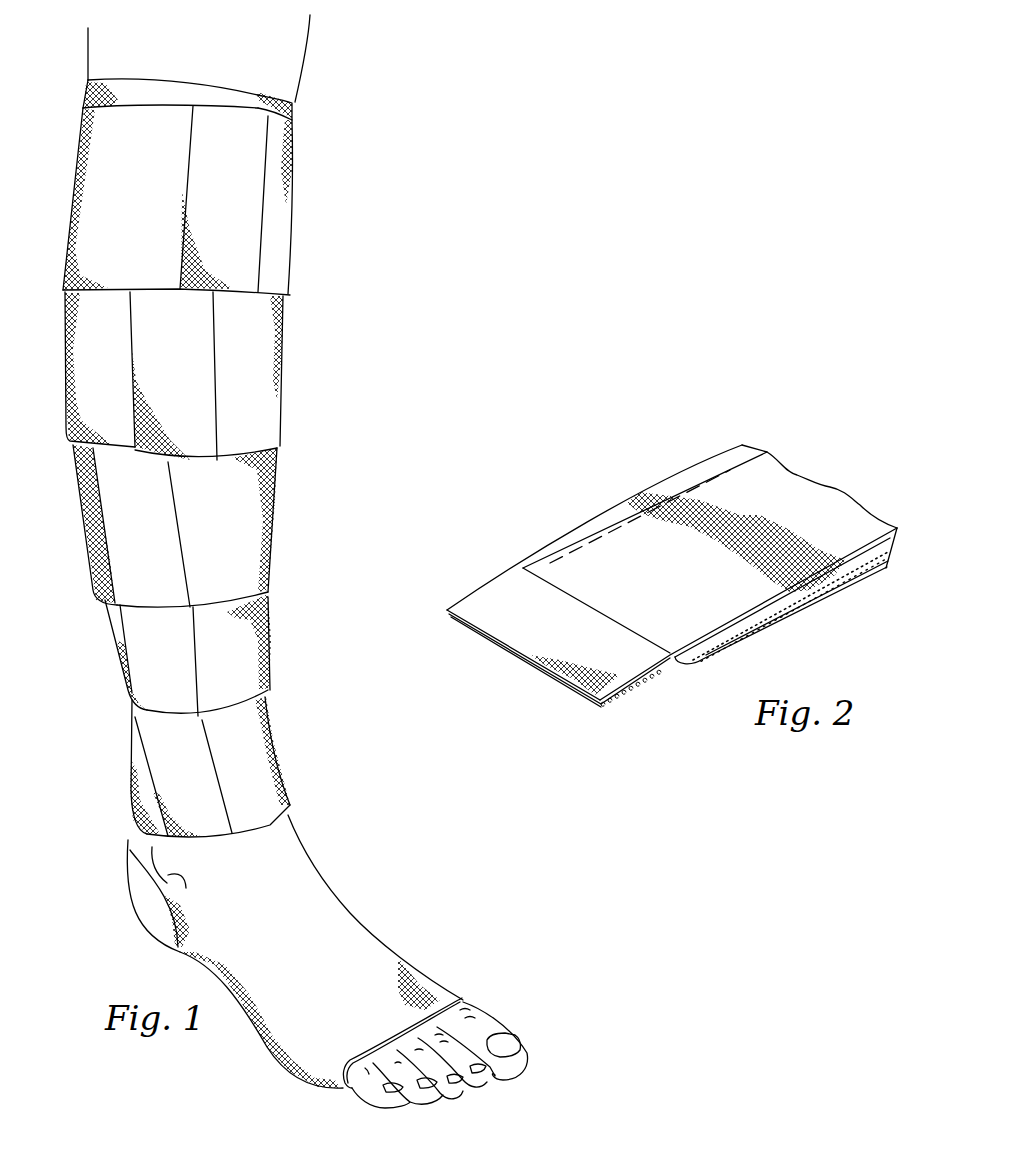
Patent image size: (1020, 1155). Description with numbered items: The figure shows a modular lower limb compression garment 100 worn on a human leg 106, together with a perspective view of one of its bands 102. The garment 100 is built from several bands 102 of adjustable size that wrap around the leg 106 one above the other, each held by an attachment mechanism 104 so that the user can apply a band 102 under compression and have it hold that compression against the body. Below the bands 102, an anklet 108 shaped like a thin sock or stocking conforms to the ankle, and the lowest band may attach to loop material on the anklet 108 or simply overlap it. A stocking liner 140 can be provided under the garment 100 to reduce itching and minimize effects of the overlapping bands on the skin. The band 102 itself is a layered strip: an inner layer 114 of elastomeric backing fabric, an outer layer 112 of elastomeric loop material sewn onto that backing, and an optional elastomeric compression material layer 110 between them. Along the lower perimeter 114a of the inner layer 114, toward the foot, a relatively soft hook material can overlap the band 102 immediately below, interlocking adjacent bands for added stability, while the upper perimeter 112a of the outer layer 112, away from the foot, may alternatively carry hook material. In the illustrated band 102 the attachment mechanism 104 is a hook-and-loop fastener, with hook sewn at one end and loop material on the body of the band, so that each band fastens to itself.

In FIG. 1, the lower limb compression garment 100 is at (364, 313).
In FIG. 1, the band 102 is at (287, 228).
In FIG. 2, the band 102 is at (626, 442).
In FIG. 1, the attachment mechanism 104 is at (231, 110).
In FIG. 2, the attachment mechanism 104 is at (550, 675).
In FIG. 1, the human leg 106 is at (314, 55).
In FIG. 1, the anklet 108 is at (373, 920).
In FIG. 2, the elastomeric compression material layer 110 is at (892, 548).
In FIG. 2, the outer layer 112 is at (828, 488).
In FIG. 2, the upper perimeter 112a is at (588, 533).
In FIG. 2, the inner layer 114 is at (893, 553).
In FIG. 2, the lower perimeter 114a is at (783, 620).
In FIG. 1, the stocking liner 140 is at (293, 116).